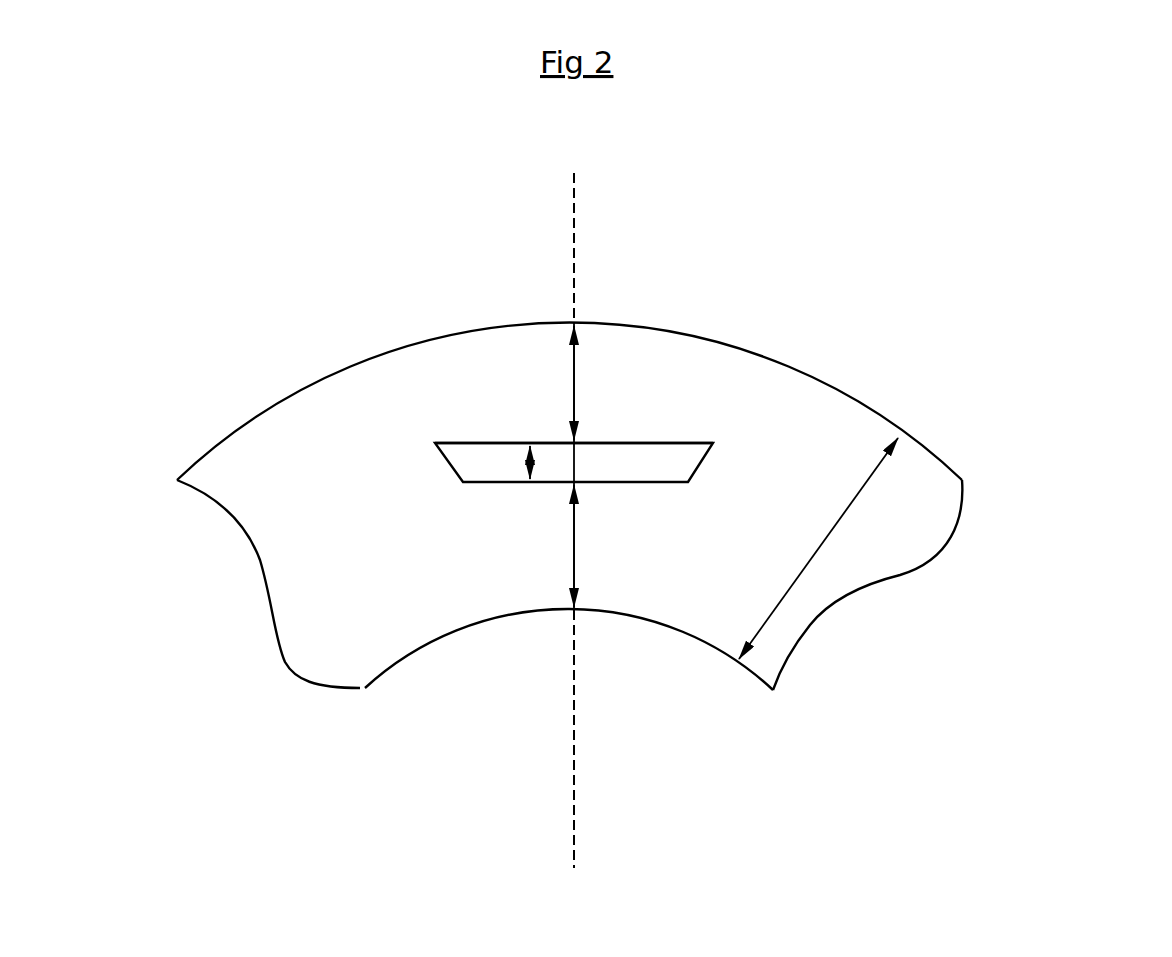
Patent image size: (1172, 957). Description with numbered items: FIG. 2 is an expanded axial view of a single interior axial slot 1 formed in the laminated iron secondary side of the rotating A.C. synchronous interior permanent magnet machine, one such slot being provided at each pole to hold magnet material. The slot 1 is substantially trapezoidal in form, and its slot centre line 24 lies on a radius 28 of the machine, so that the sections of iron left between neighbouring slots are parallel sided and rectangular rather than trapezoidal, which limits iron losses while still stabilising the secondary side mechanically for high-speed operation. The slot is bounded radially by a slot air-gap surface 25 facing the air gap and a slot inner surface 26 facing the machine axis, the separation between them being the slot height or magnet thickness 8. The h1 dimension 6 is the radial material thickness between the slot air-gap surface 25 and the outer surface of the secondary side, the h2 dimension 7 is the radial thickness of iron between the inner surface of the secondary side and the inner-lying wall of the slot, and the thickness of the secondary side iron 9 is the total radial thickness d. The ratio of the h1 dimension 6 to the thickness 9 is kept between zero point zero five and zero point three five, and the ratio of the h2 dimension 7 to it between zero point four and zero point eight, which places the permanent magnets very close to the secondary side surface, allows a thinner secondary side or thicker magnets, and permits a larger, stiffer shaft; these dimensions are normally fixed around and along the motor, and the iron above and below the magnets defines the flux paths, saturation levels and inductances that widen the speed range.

The secondary side slot 1 is at (682, 462).
The h1 dimension 6 is at (580, 402).
The h2 dimension 7 is at (572, 563).
The slot height 8 is at (526, 466).
The thickness of secondary side iron 9 is at (829, 547).
The slot centre line 24 is at (580, 462).
The slot air-gap surface 25 is at (482, 440).
The slot inner surface 26 is at (628, 485).
The radius 28 is at (578, 765).